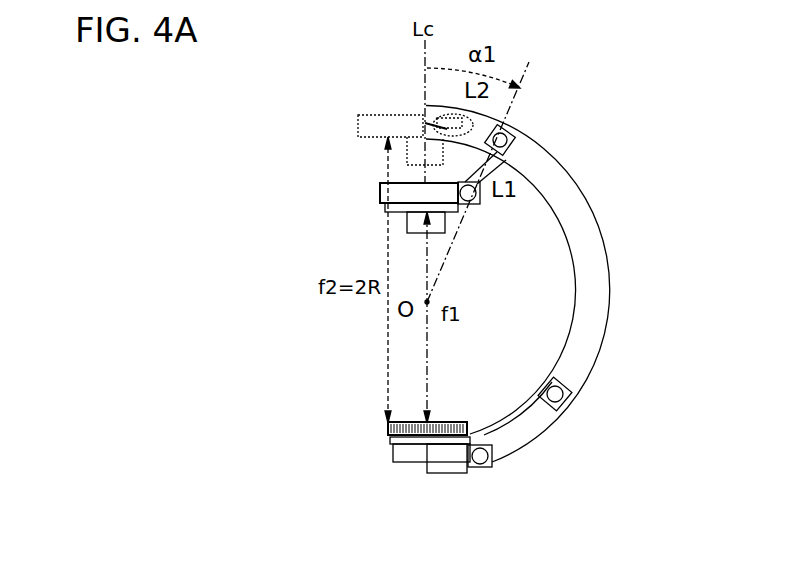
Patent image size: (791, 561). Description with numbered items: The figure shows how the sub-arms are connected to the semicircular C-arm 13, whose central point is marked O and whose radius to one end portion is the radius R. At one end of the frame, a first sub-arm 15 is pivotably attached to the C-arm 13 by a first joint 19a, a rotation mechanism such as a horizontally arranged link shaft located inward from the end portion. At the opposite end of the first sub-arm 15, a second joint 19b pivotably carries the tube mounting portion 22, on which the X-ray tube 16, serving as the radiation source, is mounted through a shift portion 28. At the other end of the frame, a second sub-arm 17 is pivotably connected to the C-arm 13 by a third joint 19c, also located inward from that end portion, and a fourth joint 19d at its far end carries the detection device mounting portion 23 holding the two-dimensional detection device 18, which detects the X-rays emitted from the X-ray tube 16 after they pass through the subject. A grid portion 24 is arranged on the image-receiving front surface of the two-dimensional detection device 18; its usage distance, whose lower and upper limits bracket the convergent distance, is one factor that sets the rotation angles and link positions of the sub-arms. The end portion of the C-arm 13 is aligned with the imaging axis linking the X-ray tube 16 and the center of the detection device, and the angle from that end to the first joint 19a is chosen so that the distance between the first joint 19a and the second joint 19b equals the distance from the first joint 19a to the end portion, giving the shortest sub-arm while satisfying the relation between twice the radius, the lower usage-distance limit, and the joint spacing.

The C-arm 13 is at (612, 285).
The first sub-arm 15 is at (510, 152).
The X-ray tube 16 is at (405, 226).
The second sub-arm 17 is at (537, 437).
The two-dimensional detection device 18 is at (393, 455).
The first joint 19a is at (518, 128).
The second joint 19b is at (471, 205).
The third joint 19c is at (565, 405).
The fourth joint 19d is at (486, 464).
The tube mounting portion 22 is at (383, 183).
The detection device mounting portion 23 is at (442, 476).
The grid portion 24 is at (388, 428).
The shift portion 28 is at (390, 208).